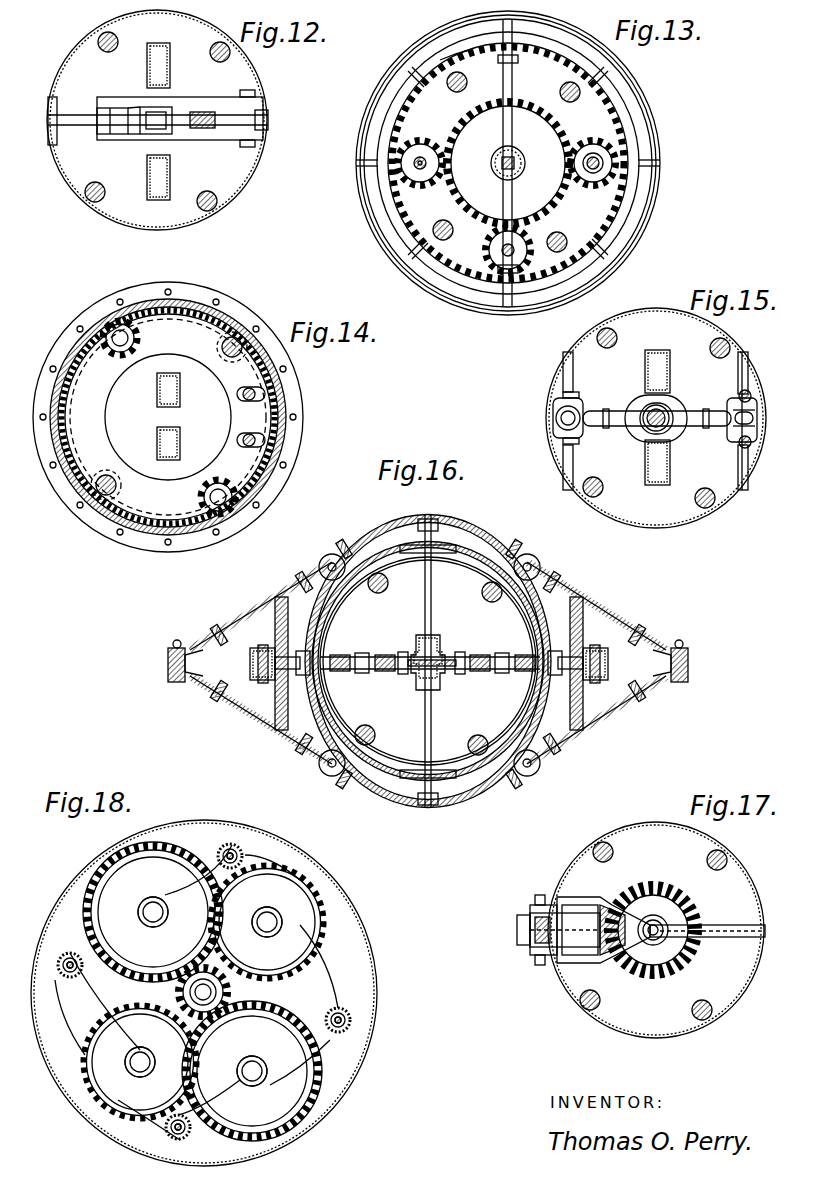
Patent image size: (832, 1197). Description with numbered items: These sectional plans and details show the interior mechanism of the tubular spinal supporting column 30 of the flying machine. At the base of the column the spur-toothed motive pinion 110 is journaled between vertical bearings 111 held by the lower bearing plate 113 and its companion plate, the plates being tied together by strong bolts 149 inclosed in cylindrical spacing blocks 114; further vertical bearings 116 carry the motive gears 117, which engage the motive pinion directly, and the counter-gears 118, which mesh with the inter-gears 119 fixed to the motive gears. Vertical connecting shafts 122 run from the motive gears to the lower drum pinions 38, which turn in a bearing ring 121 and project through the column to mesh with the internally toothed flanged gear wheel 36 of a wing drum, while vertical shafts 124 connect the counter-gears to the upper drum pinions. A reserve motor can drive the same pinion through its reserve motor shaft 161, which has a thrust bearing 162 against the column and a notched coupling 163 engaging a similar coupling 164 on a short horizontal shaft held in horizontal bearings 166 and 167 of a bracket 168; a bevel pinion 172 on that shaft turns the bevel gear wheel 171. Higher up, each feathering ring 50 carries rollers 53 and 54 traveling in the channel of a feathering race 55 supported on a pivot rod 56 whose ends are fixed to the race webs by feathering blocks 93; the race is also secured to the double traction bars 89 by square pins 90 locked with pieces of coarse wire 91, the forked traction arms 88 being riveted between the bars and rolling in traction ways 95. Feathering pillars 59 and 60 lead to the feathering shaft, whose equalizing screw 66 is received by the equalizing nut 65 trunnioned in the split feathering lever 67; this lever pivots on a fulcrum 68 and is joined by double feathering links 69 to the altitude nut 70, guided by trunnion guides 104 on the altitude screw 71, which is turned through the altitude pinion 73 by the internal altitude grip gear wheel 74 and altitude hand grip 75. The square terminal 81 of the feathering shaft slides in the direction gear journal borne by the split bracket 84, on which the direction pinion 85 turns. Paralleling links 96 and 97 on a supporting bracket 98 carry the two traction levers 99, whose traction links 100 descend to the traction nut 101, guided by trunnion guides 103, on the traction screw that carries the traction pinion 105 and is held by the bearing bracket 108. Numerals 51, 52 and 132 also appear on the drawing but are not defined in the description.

In FIG. 12, the spinal supporting column 30 is at (50, 65).
In FIG. 13, the spinal supporting column 30 is at (455, 60).
In FIG. 14, the spinal supporting column 30 is at (65, 480).
In FIG. 15, the spinal supporting column 30 is at (630, 310).
In FIG. 16, the spinal supporting column 30 is at (385, 765).
In FIG. 17, the spinal supporting column 30 is at (628, 822).
In FIG. 14, the flanged gear wheel 36 is at (290, 395).
In FIG. 14, the drum pinion 38 is at (137, 335).
In FIG. 16, the feathering ring 50 is at (595, 612).
In FIG. 16, the pin 51 is at (263, 645).
In FIG. 16, the bearing block 52 is at (250, 663).
In FIG. 16, the rollers 53 is at (418, 522).
In FIG. 16, the rollers 54 is at (322, 560).
In FIG. 16, the feathering race 55 is at (378, 790).
In FIG. 16, the pivot rod 56 is at (432, 598).
In FIG. 12, the feathering pillars 59 is at (158, 43).
In FIG. 14, the feathering pillars 59 is at (180, 385).
In FIG. 16, the feathering pillars 59 is at (440, 640).
In FIG. 15, the feathering pillars 60 is at (645, 362).
In FIG. 15, the equalizing nut 65 is at (668, 428).
In FIG. 15, the equalizing screw 66 is at (645, 412).
In FIG. 15, the split feathering lever 67 is at (690, 415).
In FIG. 15, the fulcrum 68 is at (760, 425).
In FIG. 15, the double feathering links 69 is at (562, 395).
In FIG. 15, the altitude nut 70 is at (558, 412).
In FIG. 15, the altitude screw 71 is at (572, 424).
In FIG. 13, the altitude pinion 73 is at (408, 160).
In FIG. 13, the internal altitude grip gear wheel 74 is at (618, 122).
In FIG. 13, the altitude hand grip 75 is at (648, 222).
In FIG. 13, the terminal 81 is at (515, 168).
In FIG. 13, the split bracket 84 is at (513, 128).
In FIG. 13, the direction pinion 85 is at (452, 125).
In FIG. 16, the forked traction arms 88 is at (382, 655).
In FIG. 16, the traction bars 89 is at (412, 660).
In FIG. 16, the square pins 90 is at (358, 654).
In FIG. 16, the pieces of coarse wire 91 is at (358, 673).
In FIG. 16, the feathering blocks 93 is at (410, 553).
In FIG. 12, the traction ways 95 is at (156, 118).
In FIG. 12, the paralleling links 96 is at (104, 108).
In FIG. 12, the paralleling links 97 is at (203, 128).
In FIG. 12, the supporting bracket 98 is at (262, 115).
In FIG. 12, the traction lever 99 is at (200, 97).
In FIG. 12, the traction links 100 is at (256, 93).
In FIG. 14, the traction links 100 is at (265, 440).
In FIG. 15, the traction links 100 is at (750, 393).
In FIG. 15, the traction nut 101 is at (740, 372).
In FIG. 15, the trunnion guides 103 is at (744, 355).
In FIG. 15, the trunnion guides 104 is at (568, 352).
In FIG. 13, the traction pinion 105 is at (630, 192).
In FIG. 13, the bearing bracket 108 is at (605, 158).
In FIG. 18, the motive pinion 110 is at (222, 985).
In FIG. 18, the vertical bearings 111 is at (180, 990).
In FIG. 18, the lower bearing plate 113 is at (330, 960).
In FIG. 18, the spacing blocks 114 is at (229, 850).
In FIG. 18, the vertical bearings 116 is at (150, 900).
In FIG. 18, the motive gears 117 is at (95, 880).
In FIG. 18, the counter-gears 118 is at (295, 872).
In FIG. 18, the inter-gears 119 is at (88, 905).
In FIG. 14, the bearing ring 121 is at (95, 412).
In FIG. 12, the vertical connecting shafts 122 is at (98, 42).
In FIG. 13, the vertical connecting shafts 122 is at (448, 90).
In FIG. 15, the vertical connecting shafts 122 is at (600, 330).
In FIG. 16, the vertical connecting shafts 122 is at (378, 593).
In FIG. 17, the vertical connecting shafts 122 is at (612, 848).
In FIG. 12, the vertical shafts 124 is at (97, 182).
In FIG. 13, the vertical shafts 124 is at (582, 92).
In FIG. 14, the vertical shafts 124 is at (236, 337).
In FIG. 15, the vertical shafts 124 is at (710, 345).
In FIG. 16, the vertical shafts 124 is at (482, 590).
In FIG. 17, the vertical shafts 124 is at (727, 856).
In FIG. 18, the casing 132 is at (340, 888).
In FIG. 18, the bolts 149 is at (240, 852).
In FIG. 17, the reserve motor shaft 161 is at (517, 930).
In FIG. 17, the thrust bearing 162 is at (532, 920).
In FIG. 17, the notched coupling 163 is at (540, 955).
In FIG. 17, the coupling 164 is at (570, 905).
In FIG. 17, the horizontal bearing 166 is at (585, 947).
In FIG. 17, the horizontal bearing 167 is at (630, 940).
In FIG. 17, the bracket 168 is at (737, 938).
In FIG. 17, the bevel gear wheel 171 is at (665, 985).
In FIG. 17, the bevel pinion 172 is at (618, 915).